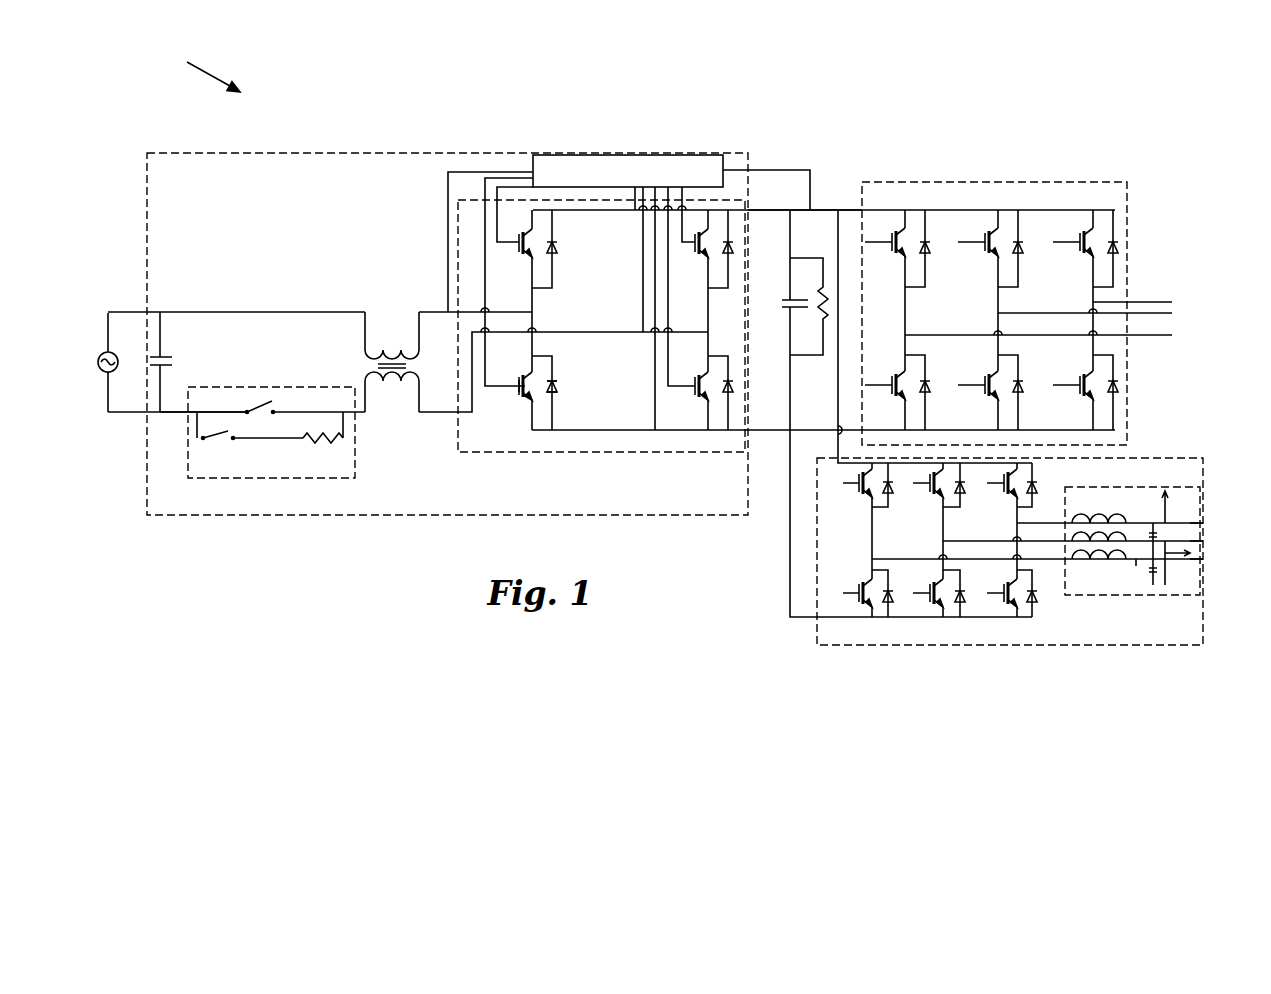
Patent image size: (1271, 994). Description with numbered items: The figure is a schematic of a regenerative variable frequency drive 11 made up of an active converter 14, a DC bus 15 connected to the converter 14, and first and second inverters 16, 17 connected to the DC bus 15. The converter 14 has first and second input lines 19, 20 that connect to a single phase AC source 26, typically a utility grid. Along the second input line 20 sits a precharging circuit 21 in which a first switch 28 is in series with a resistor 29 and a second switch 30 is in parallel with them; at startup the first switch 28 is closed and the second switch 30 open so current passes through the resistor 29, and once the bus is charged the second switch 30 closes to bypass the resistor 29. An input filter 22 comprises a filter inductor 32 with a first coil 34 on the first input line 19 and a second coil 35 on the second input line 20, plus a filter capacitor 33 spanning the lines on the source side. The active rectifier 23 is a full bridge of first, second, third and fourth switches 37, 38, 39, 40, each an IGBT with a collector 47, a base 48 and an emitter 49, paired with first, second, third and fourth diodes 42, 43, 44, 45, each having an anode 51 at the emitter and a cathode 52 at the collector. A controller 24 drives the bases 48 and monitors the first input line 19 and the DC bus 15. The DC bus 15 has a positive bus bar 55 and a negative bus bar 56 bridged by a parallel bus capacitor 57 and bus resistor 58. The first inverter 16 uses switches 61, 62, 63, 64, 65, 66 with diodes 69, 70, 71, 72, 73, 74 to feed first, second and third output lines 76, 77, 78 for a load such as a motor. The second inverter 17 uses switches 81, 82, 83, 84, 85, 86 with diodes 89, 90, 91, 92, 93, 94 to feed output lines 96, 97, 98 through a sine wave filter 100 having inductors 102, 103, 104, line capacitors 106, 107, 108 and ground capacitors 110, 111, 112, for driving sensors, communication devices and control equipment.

The regenerative variable frequency drive 11 is at (202, 68).
The active converter 14 is at (462, 153).
The DC bus 15 is at (815, 210).
The first inverter 16 is at (960, 182).
The second inverter 17 is at (975, 648).
The first input line 19 is at (178, 312).
The second input line 20 is at (122, 413).
The precharging circuit 21 is at (300, 480).
The input filter 22 is at (364, 347).
The active rectifier 23 is at (507, 455).
The controller 24 is at (683, 155).
The single phase AC source 26 is at (96, 368).
The first switch 28 is at (227, 436).
The resistor 29 is at (307, 443).
The second switch 30 is at (257, 406).
The filter inductor 32 is at (364, 350).
The filter capacitor 33 is at (170, 358).
The first coil 34 is at (398, 348).
The second coil 35 is at (400, 383).
The first switch 37 is at (521, 249).
The second switch 38 is at (520, 381).
The third switch 39 is at (697, 249).
The fourth switch 40 is at (698, 381).
The first diode 42 is at (558, 247).
The second diode 43 is at (559, 386).
The third diode 44 is at (734, 247).
The fourth diode 45 is at (734, 386).
The collector 47 is at (523, 378).
The base 48 is at (517, 393).
The emitter 49 is at (524, 398).
The anode 51 is at (553, 382).
The cathode 52 is at (553, 391).
The positive bus bar 55 is at (763, 208).
The negative bus bar 56 is at (789, 437).
The bus capacitor 57 is at (787, 307).
The bus resistor 58 is at (822, 330).
The first switch 61 is at (896, 248).
The second switch 62 is at (895, 378).
The third switch 63 is at (989, 249).
The fourth switch 64 is at (989, 378).
The fifth switch 65 is at (1080, 240).
The sixth switch 66 is at (1080, 380).
The first diode 69 is at (929, 243).
The second diode 70 is at (930, 388).
The third diode 71 is at (1024, 244).
The fourth diode 72 is at (1024, 386).
The fifth diode 73 is at (1119, 246).
The sixth diode 74 is at (1119, 386).
The first output line 76 is at (1158, 338).
The second output line 77 is at (1155, 315).
The third output line 78 is at (1155, 298).
The first switch 81 is at (862, 483).
The second switch 82 is at (860, 592).
The third switch 83 is at (933, 482).
The fourth switch 84 is at (931, 590).
The fifth switch 85 is at (1006, 483).
The sixth switch 86 is at (1006, 590).
The first diode 89 is at (893, 493).
The second diode 90 is at (891, 598).
The third diode 91 is at (963, 493).
The fourth diode 92 is at (962, 598).
The fifth diode 93 is at (1036, 493).
The sixth diode 94 is at (1036, 598).
The first output line 96 is at (1204, 559).
The second output line 97 is at (1203, 541).
The third output line 98 is at (1204, 523).
The sine wave filter 100 is at (1100, 489).
The first inductor 102 is at (1070, 558).
The second inductor 103 is at (1070, 540).
The third inductor 104 is at (1070, 521).
The first line capacitor 106 is at (1136, 561).
The second line capacitor 107 is at (1152, 520).
The third line capacitor 108 is at (1158, 533).
The first ground capacitor 110 is at (1166, 572).
The second ground capacitor 111 is at (1143, 577).
The third ground capacitor 112 is at (1168, 494).